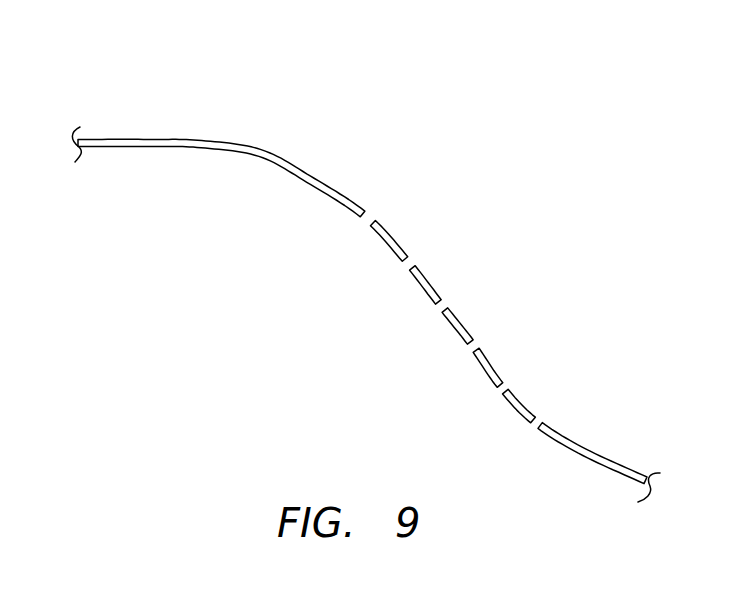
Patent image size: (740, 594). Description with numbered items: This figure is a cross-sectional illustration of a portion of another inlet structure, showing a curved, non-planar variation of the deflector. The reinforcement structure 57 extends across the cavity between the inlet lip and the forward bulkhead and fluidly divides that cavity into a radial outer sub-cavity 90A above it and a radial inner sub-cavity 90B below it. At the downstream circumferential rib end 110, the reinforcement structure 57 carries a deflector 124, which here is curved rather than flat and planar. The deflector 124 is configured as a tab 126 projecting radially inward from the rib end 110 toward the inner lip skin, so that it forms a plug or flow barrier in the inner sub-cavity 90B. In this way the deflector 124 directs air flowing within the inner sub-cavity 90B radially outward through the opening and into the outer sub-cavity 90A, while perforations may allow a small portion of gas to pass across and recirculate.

The reinforcement structure 57 is at (346, 273).
The circumferential rib end 110 is at (199, 137).
The deflector 124 is at (456, 311).
The tab 126 is at (478, 365).
The radial outer sub-cavity 90A is at (170, 58).
The radial inner sub-cavity 90B is at (177, 288).